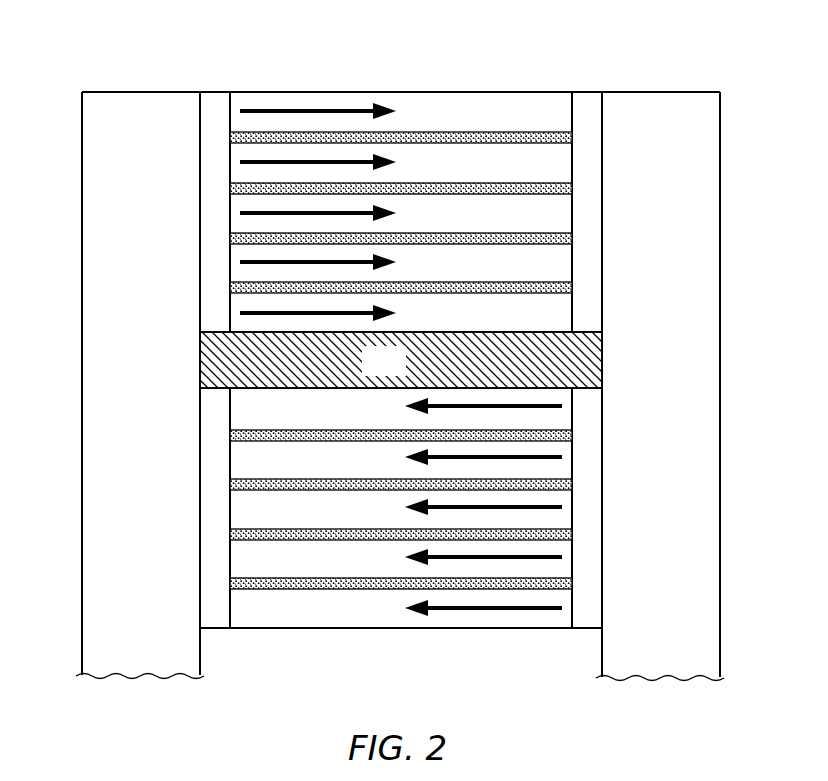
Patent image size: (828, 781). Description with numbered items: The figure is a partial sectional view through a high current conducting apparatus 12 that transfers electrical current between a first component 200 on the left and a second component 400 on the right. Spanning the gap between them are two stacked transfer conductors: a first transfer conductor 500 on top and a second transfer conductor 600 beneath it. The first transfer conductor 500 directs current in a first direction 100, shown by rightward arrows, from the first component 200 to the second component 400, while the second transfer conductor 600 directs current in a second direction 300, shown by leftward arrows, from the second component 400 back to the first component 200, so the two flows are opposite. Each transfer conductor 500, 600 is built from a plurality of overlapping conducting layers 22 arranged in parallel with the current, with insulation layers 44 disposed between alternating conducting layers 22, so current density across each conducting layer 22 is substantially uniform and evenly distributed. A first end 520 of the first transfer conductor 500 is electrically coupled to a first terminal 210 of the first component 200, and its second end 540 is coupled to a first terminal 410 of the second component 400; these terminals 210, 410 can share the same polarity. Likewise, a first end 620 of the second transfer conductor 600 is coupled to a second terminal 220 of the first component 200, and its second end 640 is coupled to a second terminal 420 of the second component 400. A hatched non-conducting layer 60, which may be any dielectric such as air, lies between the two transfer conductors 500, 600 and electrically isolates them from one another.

The high current conducting apparatus 12 is at (113, 70).
The conducting layers 22 is at (398, 621).
The insulation layers 44 is at (495, 233).
The non-conducting layer 60 is at (401, 360).
The first direction 100 is at (320, 213).
The second direction 300 is at (530, 510).
The first component 200 is at (160, 393).
The first terminal of the first component 210 is at (205, 102).
The second terminal of the first component 220 is at (215, 610).
The second component 400 is at (681, 393).
The first terminal of the second component 410 is at (597, 108).
The second terminal of the second component 420 is at (595, 612).
The first transfer conductor 500 is at (262, 92).
The first end of the first transfer conductor 520 is at (214, 195).
The second end of the first transfer conductor 540 is at (592, 192).
The second transfer conductor 600 is at (418, 628).
The first end of the second transfer conductor 620 is at (228, 600).
The second end of the second transfer conductor 640 is at (582, 605).